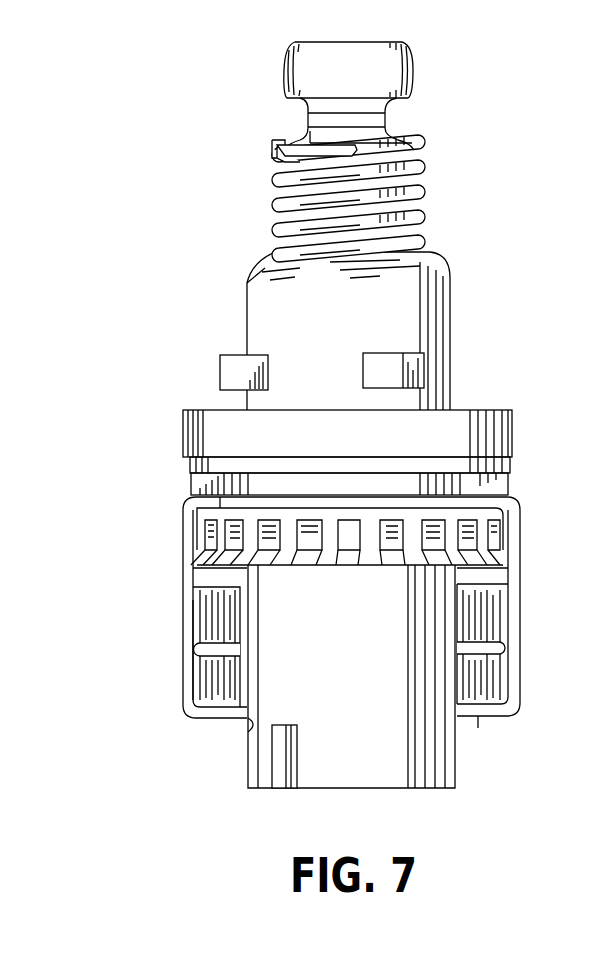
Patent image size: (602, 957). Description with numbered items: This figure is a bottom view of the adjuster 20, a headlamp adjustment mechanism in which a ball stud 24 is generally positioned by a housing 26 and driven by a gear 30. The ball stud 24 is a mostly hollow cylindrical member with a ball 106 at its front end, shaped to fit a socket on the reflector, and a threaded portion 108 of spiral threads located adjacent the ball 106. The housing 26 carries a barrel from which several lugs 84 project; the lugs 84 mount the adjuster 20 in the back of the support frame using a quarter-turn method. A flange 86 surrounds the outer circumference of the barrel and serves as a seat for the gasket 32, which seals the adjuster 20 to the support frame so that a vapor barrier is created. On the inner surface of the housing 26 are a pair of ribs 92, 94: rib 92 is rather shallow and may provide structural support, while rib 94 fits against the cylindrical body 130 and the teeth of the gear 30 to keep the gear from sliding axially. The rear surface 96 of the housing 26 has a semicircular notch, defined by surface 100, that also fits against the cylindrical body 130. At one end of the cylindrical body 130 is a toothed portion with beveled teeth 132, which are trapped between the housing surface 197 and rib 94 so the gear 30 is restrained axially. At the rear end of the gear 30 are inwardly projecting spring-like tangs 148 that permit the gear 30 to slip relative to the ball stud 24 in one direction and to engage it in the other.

The adjuster 20 is at (518, 372).
The ball stud 24 is at (452, 297).
The housing 26 is at (520, 700).
The gear 30 is at (240, 632).
The gasket 32 is at (495, 433).
The lugs 84 is at (418, 362).
The flange 86 is at (215, 466).
The rib 92 is at (490, 645).
The rib 94 is at (488, 573).
The rear surface 96 is at (478, 718).
The notch surface 100 is at (262, 724).
The ball 106 is at (386, 72).
The threaded portion 108 is at (424, 172).
The cylindrical body 130 is at (370, 767).
The beveled teeth 132 is at (235, 541).
The tangs 148 is at (285, 770).
The housing surface 197 is at (494, 510).